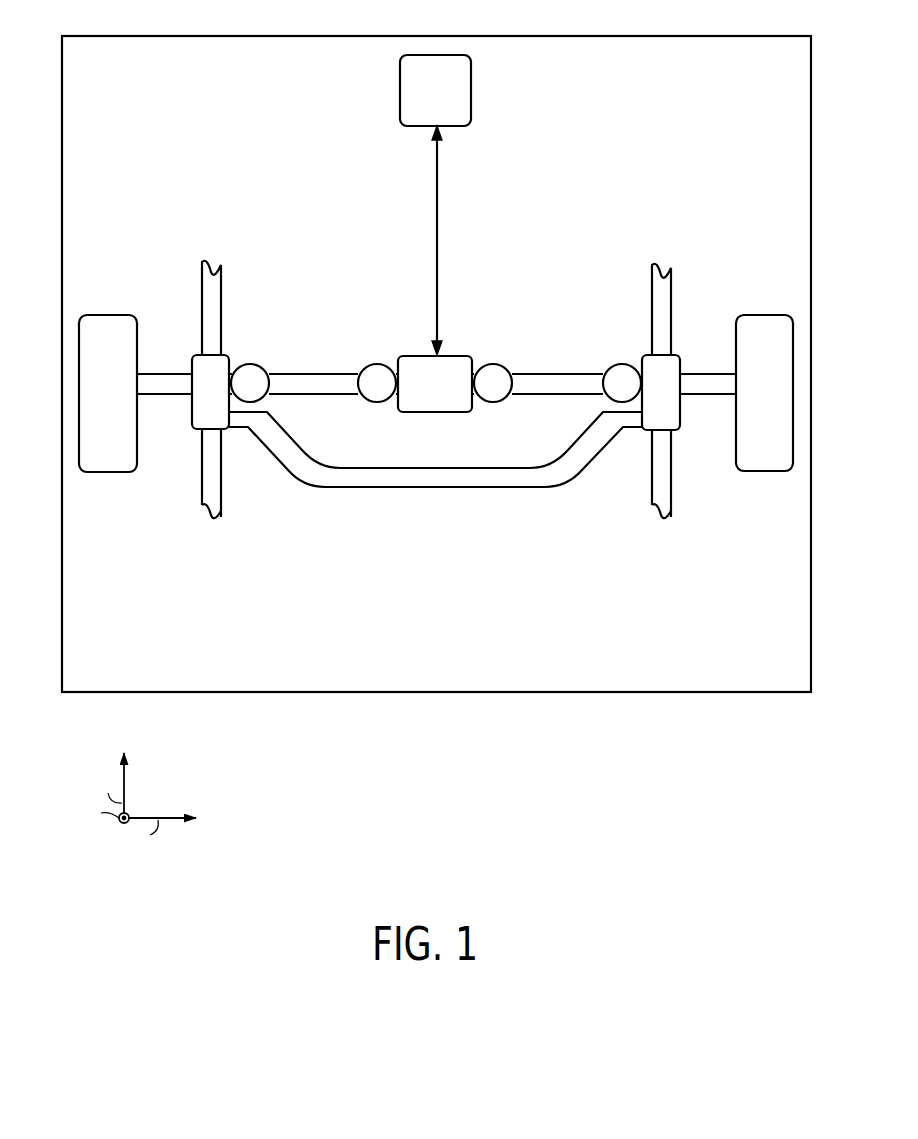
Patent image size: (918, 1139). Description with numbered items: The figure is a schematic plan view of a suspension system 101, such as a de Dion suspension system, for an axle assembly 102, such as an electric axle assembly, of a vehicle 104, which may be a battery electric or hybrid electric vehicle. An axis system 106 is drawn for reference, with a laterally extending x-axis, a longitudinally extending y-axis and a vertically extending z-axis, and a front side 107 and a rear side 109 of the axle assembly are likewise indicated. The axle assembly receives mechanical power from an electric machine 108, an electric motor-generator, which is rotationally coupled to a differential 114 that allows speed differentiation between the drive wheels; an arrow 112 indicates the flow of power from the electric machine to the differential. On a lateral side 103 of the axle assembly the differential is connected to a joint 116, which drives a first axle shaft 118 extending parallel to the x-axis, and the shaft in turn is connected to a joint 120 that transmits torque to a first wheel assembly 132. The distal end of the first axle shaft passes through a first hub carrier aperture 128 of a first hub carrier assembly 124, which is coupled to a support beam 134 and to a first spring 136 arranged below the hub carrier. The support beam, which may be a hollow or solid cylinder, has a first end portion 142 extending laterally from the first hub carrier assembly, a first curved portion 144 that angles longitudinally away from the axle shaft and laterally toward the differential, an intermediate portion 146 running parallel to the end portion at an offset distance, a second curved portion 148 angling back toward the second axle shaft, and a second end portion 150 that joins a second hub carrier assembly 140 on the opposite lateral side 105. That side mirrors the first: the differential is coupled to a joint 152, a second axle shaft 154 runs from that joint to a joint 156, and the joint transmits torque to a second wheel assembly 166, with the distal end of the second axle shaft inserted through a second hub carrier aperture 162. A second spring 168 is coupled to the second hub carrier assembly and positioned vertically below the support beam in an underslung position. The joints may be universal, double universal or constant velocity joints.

The suspension system 101 is at (211, 166).
The axle assembly 102 is at (158, 234).
The lateral side 103 is at (76, 390).
The vehicle 104 is at (68, 36).
The lateral side 105 is at (806, 416).
The axis system 106 is at (167, 785).
The front side 107 is at (373, 591).
The electric machine 108 is at (471, 94).
The rear side 109 is at (402, 253).
The arrow 112 is at (438, 200).
The differential 114 is at (397, 362).
The joint 116 is at (370, 366).
The first axle shaft 118 is at (295, 331).
The joint 120 is at (242, 366).
The first hub carrier assembly 124 is at (186, 433).
The first hub carrier aperture 128 is at (190, 373).
The first wheel assembly 132 is at (90, 314).
The support beam 134 is at (399, 442).
The first spring 136 is at (193, 488).
The second hub carrier assembly 140 is at (691, 423).
The first end portion 142 is at (238, 429).
The first curved portion 144 is at (302, 487).
The intermediate portion 146 is at (433, 488).
The second curved portion 148 is at (596, 460).
The second end portion 150 is at (640, 430).
The joint 152 is at (491, 364).
The second axle shaft 154 is at (535, 352).
The joint 156 is at (608, 368).
The second hub carrier aperture 162 is at (680, 387).
The second wheel assembly 166 is at (781, 315).
The second spring 168 is at (682, 496).